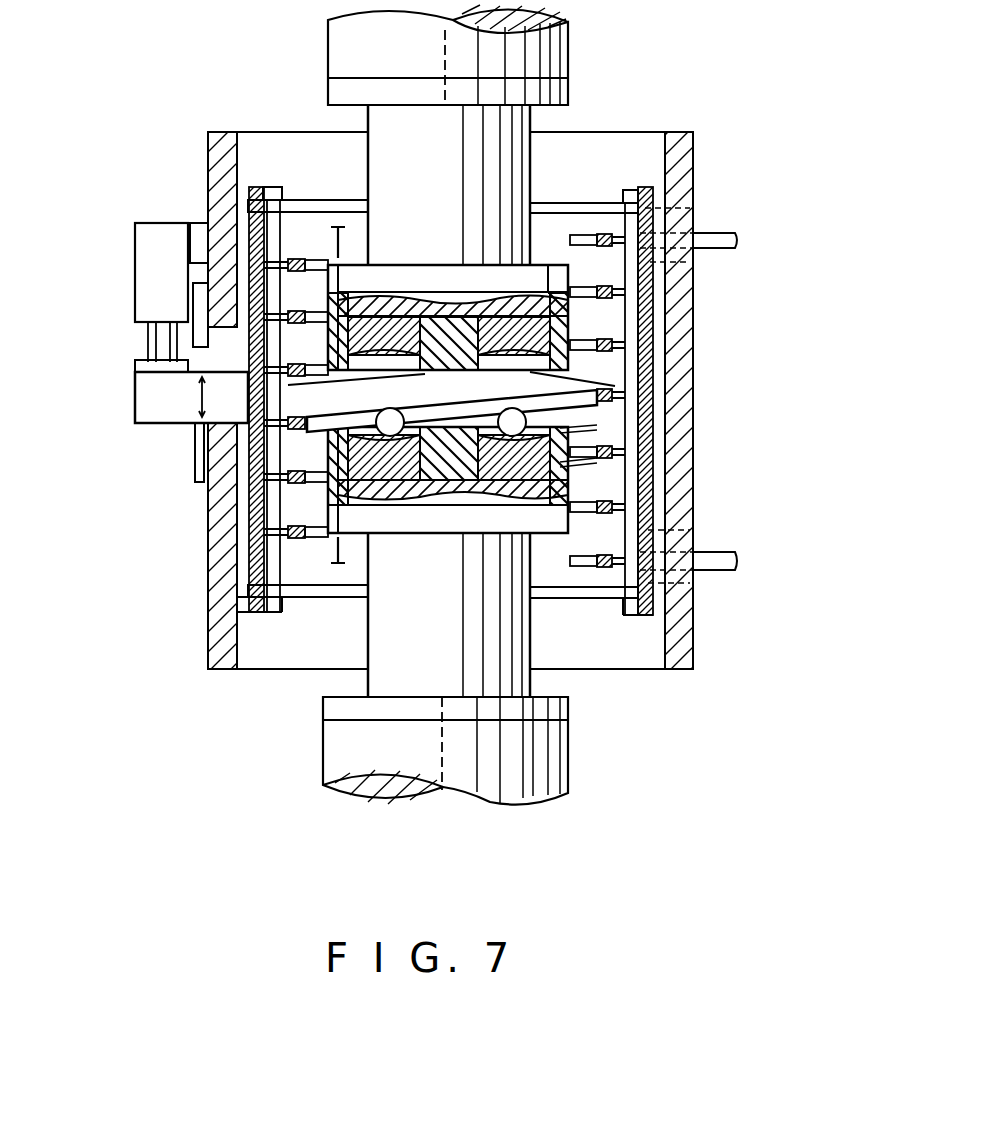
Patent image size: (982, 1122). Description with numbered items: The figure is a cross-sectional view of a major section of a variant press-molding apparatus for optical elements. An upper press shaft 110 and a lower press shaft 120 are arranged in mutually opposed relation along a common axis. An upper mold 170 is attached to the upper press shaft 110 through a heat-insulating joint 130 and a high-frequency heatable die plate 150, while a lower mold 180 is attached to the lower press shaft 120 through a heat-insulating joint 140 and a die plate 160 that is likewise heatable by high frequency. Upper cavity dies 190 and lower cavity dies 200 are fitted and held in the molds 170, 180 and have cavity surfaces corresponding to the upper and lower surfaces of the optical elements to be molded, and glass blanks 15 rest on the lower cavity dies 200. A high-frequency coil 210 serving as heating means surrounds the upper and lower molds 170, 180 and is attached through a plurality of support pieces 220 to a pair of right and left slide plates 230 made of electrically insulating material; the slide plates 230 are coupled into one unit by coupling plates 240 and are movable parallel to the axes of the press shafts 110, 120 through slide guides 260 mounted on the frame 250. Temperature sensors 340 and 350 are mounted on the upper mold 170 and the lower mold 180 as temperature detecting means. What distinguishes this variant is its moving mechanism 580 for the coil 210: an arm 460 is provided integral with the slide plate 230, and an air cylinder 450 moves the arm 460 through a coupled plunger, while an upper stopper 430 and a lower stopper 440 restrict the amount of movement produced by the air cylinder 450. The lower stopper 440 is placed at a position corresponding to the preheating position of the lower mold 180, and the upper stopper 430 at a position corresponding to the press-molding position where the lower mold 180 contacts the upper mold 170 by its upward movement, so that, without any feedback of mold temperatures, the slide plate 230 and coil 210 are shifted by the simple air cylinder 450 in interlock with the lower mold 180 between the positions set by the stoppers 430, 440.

The glass blank 15 is at (493, 397).
The upper press shaft 110 is at (572, 62).
The lower press shaft 120 is at (570, 773).
The heat-insulating joint 130 is at (535, 127).
The heat-insulating joint 140 is at (533, 655).
The die plate 150 is at (545, 268).
The die plate 160 is at (562, 533).
The upper mold 170 is at (578, 318).
The lower mold 180 is at (575, 462).
The upper cavity die 190 is at (527, 375).
The lower cavity die 200 is at (585, 430).
The high-frequency coil 210 is at (615, 372).
The support piece 220 is at (640, 345).
The slide plate 230 is at (240, 230).
The coupling plate 240 is at (330, 198).
The frame 250 is at (695, 172).
The slide guide 260 is at (272, 186).
The temperature sensor 340 is at (370, 238).
The temperature sensor 350 is at (338, 550).
The upper stopper 430 is at (190, 343).
The lower stopper 440 is at (190, 463).
The air cylinder 450 is at (133, 278).
The arm 460 is at (138, 402).
The moving mechanism 580 is at (149, 366).